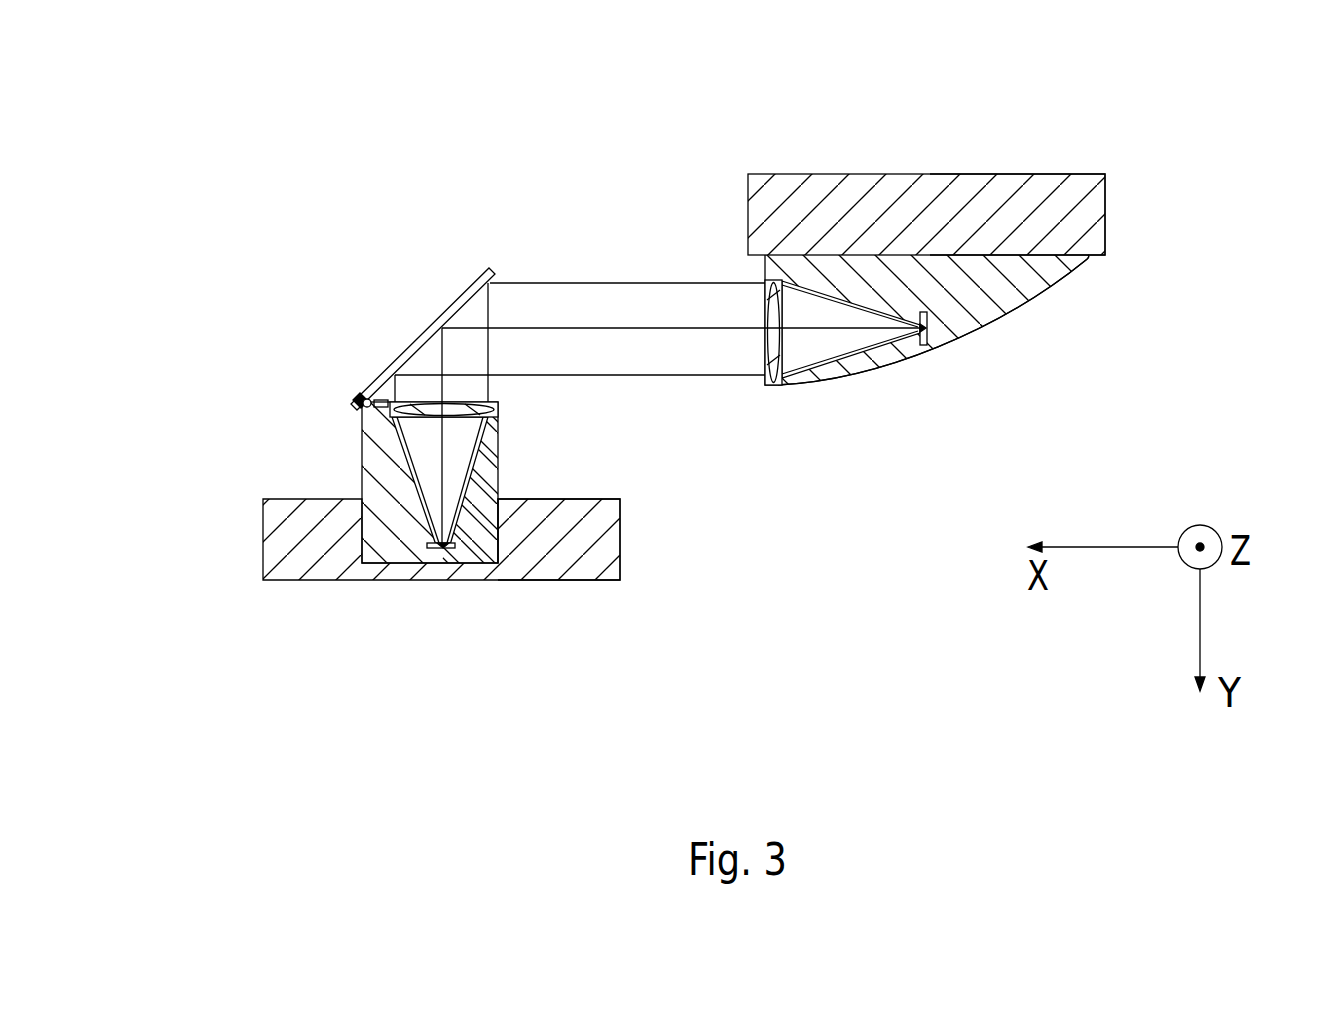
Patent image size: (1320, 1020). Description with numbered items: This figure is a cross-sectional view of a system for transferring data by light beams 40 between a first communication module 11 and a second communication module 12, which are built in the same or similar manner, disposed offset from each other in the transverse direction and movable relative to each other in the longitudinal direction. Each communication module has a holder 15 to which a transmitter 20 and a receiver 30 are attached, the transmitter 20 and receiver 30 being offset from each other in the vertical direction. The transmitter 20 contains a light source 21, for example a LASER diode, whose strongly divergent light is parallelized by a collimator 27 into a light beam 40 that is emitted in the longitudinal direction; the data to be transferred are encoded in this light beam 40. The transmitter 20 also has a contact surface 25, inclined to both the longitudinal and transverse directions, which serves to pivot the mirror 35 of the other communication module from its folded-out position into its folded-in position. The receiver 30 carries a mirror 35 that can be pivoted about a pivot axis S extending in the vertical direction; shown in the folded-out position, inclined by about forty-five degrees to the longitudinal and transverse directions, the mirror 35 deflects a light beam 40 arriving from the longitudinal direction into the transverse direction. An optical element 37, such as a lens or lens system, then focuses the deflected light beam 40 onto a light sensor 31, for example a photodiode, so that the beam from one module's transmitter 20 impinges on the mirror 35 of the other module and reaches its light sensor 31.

The first communication module 11 is at (870, 210).
The second communication module 12 is at (295, 532).
The holder 15 is at (1015, 207).
The transmitter 20 is at (1000, 300).
The light source 21 is at (927, 343).
The contact surface 25 is at (1070, 272).
The collimator 27 is at (773, 380).
The receiver 30 is at (377, 457).
The light sensor 31 is at (440, 545).
The mirror 35 is at (460, 297).
The optical element 37 is at (500, 425).
The light beam 40 is at (627, 328).
The pivot axis S is at (362, 398).